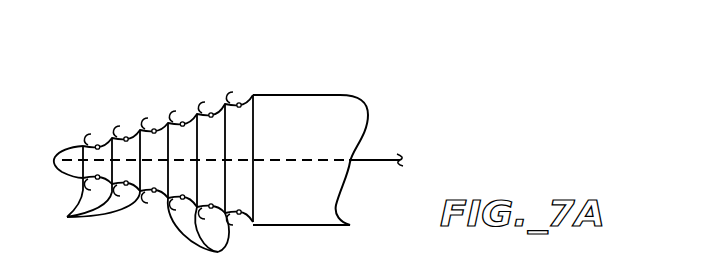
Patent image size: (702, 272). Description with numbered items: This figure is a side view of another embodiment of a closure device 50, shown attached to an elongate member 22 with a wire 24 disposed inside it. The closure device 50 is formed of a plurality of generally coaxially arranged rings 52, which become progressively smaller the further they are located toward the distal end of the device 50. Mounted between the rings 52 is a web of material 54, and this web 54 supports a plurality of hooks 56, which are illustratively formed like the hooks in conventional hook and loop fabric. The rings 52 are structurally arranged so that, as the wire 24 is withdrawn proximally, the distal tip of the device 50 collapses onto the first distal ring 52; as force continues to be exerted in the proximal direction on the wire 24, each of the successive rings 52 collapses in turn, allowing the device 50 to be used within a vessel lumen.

The closure device 50 is at (109, 55).
The elongate member 22 is at (337, 95).
The wire 24 is at (373, 160).
The rings 52 is at (250, 93).
The web of material 54 is at (163, 130).
The hooks 56 is at (117, 132).